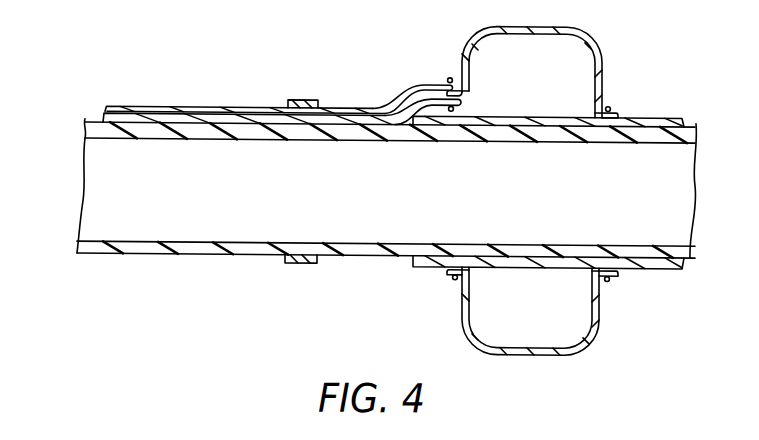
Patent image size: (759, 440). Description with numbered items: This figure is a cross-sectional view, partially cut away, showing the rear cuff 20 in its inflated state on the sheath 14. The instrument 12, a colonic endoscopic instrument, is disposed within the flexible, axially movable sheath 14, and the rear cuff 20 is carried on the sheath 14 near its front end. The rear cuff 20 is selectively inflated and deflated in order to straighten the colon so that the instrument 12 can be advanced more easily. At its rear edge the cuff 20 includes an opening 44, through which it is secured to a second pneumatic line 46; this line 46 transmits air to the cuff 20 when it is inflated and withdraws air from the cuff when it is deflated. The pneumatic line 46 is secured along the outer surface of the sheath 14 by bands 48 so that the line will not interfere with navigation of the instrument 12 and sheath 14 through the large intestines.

The instrument 12 is at (372, 197).
The sheath 14 is at (83, 125).
The rear cuff 20 is at (554, 24).
The opening 44 is at (433, 82).
The second pneumatic line 46 is at (212, 105).
The bands 48 is at (297, 98).